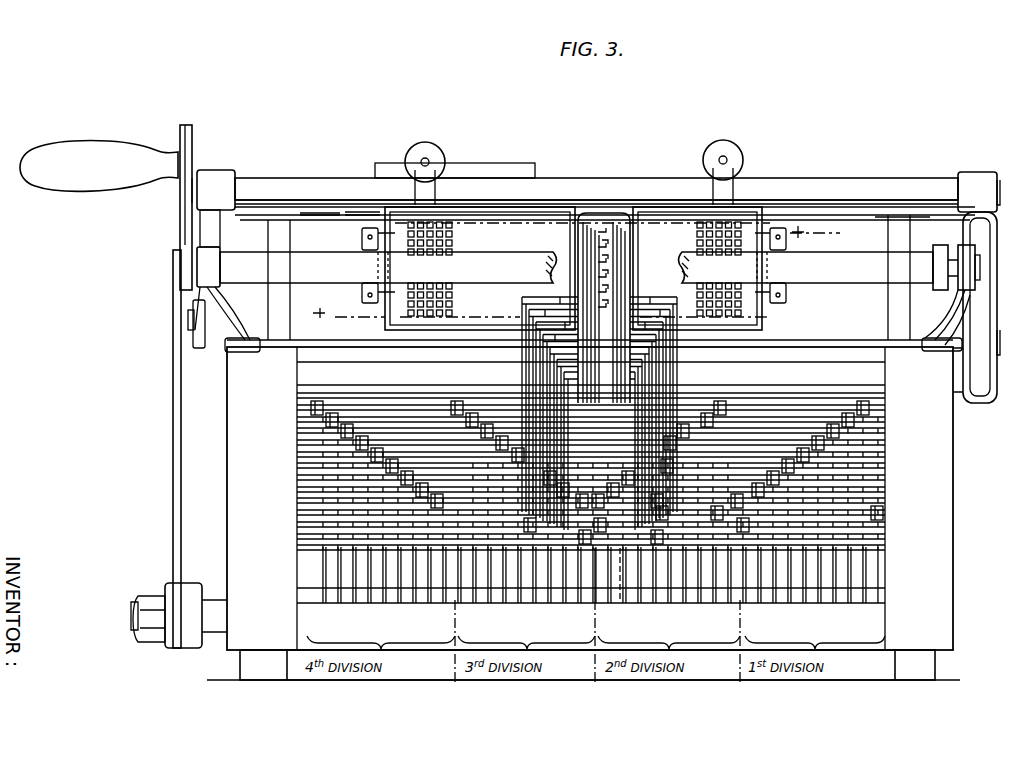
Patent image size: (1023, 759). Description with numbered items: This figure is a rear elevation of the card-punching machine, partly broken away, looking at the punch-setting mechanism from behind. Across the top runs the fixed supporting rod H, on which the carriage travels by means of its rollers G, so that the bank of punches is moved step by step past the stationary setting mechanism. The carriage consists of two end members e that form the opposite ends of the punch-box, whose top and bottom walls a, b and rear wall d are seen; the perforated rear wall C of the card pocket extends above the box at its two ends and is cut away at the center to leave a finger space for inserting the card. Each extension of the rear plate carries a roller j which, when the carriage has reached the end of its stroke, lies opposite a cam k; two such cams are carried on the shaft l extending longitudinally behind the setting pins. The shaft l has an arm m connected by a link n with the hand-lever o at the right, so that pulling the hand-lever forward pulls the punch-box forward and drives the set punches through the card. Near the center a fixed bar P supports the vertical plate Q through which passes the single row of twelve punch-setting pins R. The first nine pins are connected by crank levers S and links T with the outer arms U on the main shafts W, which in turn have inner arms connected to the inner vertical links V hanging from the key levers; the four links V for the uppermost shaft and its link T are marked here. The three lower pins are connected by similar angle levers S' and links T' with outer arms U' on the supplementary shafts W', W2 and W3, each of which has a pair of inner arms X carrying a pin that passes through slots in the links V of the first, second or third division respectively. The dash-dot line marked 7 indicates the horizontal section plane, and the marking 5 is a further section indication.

The rollers G is at (740, 140).
The rear wall of the pocket C is at (510, 192).
The top wall of the punch box a is at (497, 205).
The rear wall of the punch box d is at (505, 218).
The crank levers S is at (599, 275).
The punch-setting pins R is at (600, 226).
The vertical plate Q is at (618, 220).
The fixed supporting rod H is at (822, 196).
The end members e is at (333, 232).
The rail piece 5 is at (316, 216).
The roller j is at (362, 240).
The section line marker 7 is at (576, 278).
The cam k is at (940, 268).
The arm m is at (208, 238).
The shaft l is at (388, 267).
The link n is at (178, 343).
The hand-lever o is at (178, 378).
The bottom wall of the punch box b is at (442, 332).
The fixed bar P is at (755, 352).
The outer arms U is at (524, 409).
The links T is at (539, 438).
The angle levers S' is at (670, 409).
The links T' is at (673, 438).
The shafts W is at (611, 448).
The uppermost supplementary shaft W' is at (612, 518).
The second supplementary shaft W2 is at (882, 528).
The lowermost supplementary shaft W3 is at (882, 545).
The inner vertical links V is at (324, 576).
The inner arms X is at (594, 590).
The outer arm U' is at (623, 591).